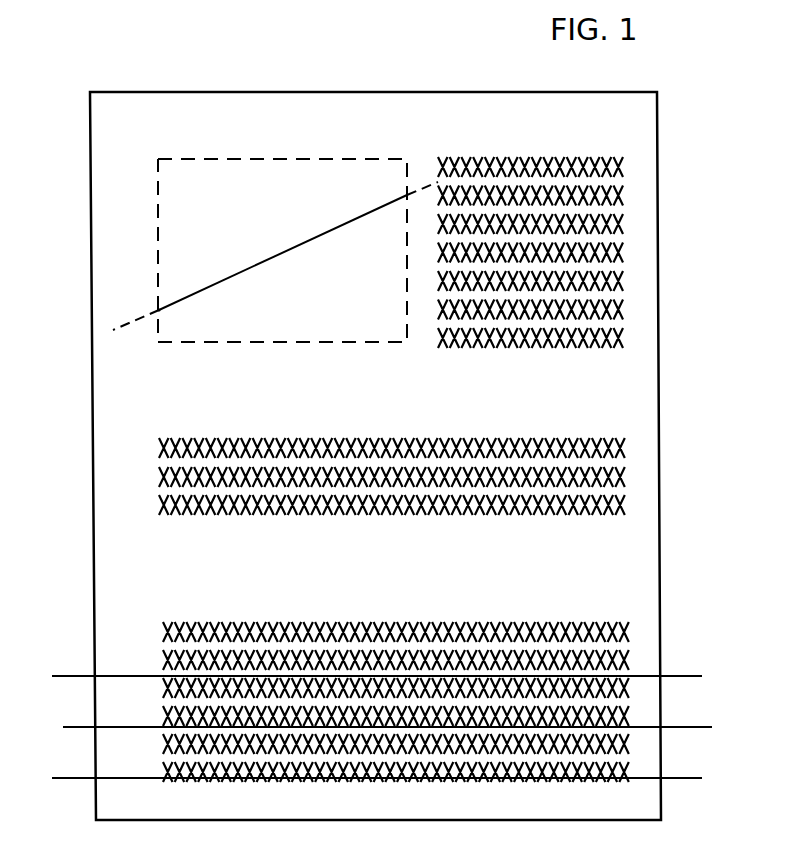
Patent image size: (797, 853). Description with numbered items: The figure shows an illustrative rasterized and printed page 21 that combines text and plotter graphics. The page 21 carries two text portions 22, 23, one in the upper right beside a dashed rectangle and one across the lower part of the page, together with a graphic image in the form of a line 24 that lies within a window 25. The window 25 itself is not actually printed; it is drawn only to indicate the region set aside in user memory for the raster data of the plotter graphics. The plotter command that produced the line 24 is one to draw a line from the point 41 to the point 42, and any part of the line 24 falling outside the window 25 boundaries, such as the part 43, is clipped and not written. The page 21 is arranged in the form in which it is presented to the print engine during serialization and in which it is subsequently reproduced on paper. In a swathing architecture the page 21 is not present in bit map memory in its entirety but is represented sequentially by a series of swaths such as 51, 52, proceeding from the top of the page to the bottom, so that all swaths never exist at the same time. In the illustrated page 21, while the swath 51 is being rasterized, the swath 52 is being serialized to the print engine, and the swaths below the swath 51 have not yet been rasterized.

The printed page 21 is at (657, 155).
The text portion 22 is at (625, 280).
The text portion 23 is at (592, 622).
The line 24 is at (282, 237).
The window 25 is at (201, 158).
The point 41 is at (157, 307).
The point 42 is at (408, 192).
The part of the line 43 is at (142, 318).
The swath 51 is at (690, 757).
The swath 52 is at (698, 698).